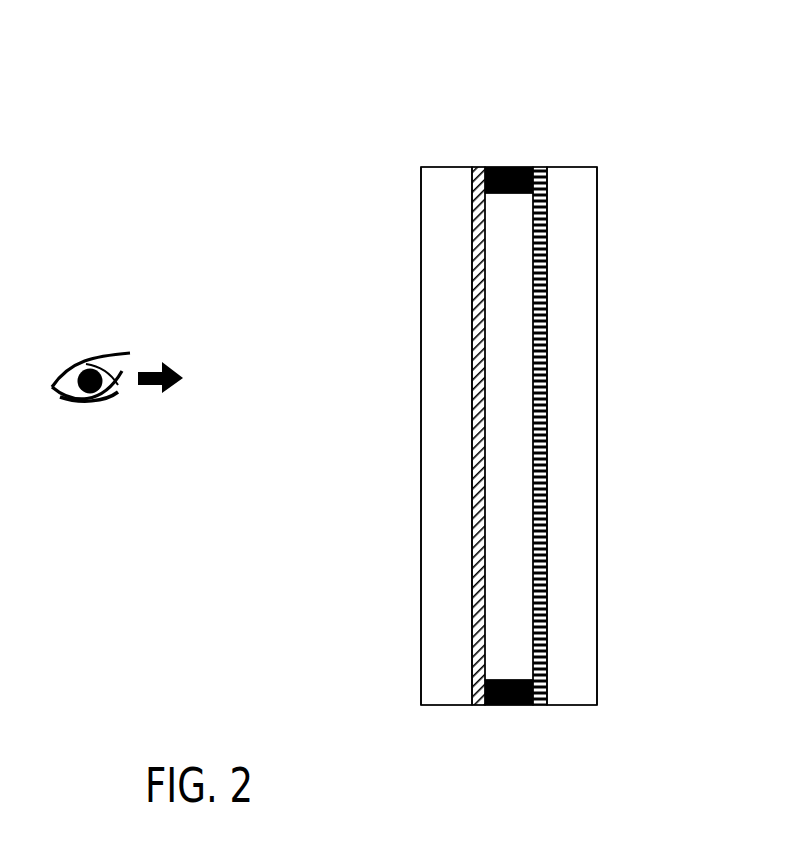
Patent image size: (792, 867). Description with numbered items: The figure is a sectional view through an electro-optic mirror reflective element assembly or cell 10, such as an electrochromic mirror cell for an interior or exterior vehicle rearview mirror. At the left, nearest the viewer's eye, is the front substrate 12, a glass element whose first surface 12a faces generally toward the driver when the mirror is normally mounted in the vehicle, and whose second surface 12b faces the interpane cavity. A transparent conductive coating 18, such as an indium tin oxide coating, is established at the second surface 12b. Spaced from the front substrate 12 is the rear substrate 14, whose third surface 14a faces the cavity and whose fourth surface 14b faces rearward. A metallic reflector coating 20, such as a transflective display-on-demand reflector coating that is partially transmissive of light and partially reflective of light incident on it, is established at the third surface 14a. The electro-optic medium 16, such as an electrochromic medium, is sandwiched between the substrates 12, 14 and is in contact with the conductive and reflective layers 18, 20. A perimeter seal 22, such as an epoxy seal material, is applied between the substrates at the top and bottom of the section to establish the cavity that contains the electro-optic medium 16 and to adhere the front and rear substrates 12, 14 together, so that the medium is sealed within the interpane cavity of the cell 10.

The electro-optic mirror reflective element assembly or cell 10 is at (314, 111).
The front substrate 12 is at (446, 466).
The first surface 12a is at (421, 343).
The second surface 12b is at (476, 588).
The rear substrate 14 is at (583, 405).
The third surface 14a is at (547, 336).
The fourth surface 14b is at (598, 236).
The electro-optic medium 16 is at (510, 297).
The transparent conductive coating 18 is at (480, 512).
The metallic reflector coating 20 is at (538, 474).
The perimeter seal 22 is at (512, 167).